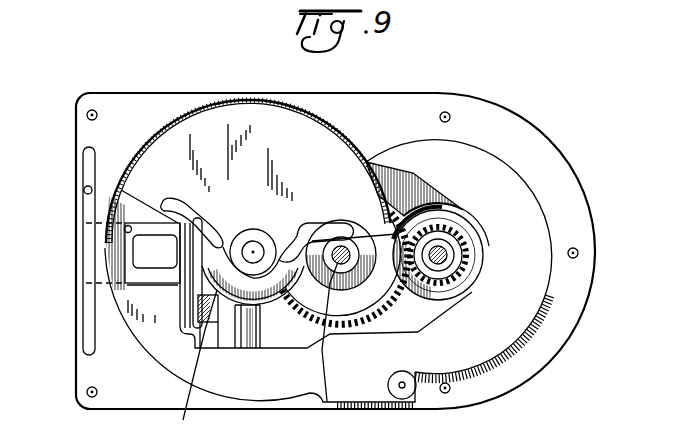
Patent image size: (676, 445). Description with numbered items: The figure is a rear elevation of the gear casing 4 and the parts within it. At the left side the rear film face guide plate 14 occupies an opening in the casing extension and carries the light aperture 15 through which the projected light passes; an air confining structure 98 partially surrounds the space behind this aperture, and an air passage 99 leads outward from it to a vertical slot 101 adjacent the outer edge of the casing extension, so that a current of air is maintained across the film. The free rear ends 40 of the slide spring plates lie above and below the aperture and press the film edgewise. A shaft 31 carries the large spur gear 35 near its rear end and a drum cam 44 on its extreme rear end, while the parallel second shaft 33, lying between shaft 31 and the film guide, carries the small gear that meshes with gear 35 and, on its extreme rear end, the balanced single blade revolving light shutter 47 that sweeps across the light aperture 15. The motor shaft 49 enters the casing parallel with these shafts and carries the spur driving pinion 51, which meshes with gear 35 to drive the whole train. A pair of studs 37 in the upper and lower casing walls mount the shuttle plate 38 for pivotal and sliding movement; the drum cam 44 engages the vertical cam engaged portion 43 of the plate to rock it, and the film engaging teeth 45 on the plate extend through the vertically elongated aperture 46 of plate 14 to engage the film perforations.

The gear casing 4 is at (503, 122).
The rear film face guide plate 14 is at (150, 275).
The light aperture 15 is at (140, 257).
The shaft 31 is at (327, 401).
The second shaft 33 is at (253, 250).
The large spur gear 35 is at (357, 318).
The studs 37 is at (259, 338).
The shuttle plate 38 is at (210, 307).
The rear ends of spring plates 40 is at (192, 364).
The cam engaged portion 43 is at (306, 312).
The drum cam 44 is at (366, 279).
The film engaging teeth 45 is at (180, 292).
The vertically elongated aperture 46 is at (182, 334).
The revolving light shutter 47 is at (263, 118).
The motor shaft 49 is at (452, 255).
The spur driving pinion 51 is at (470, 253).
The air confining structure 98 is at (125, 230).
The air passage 99 is at (88, 228).
The vertical slot 101 is at (84, 190).